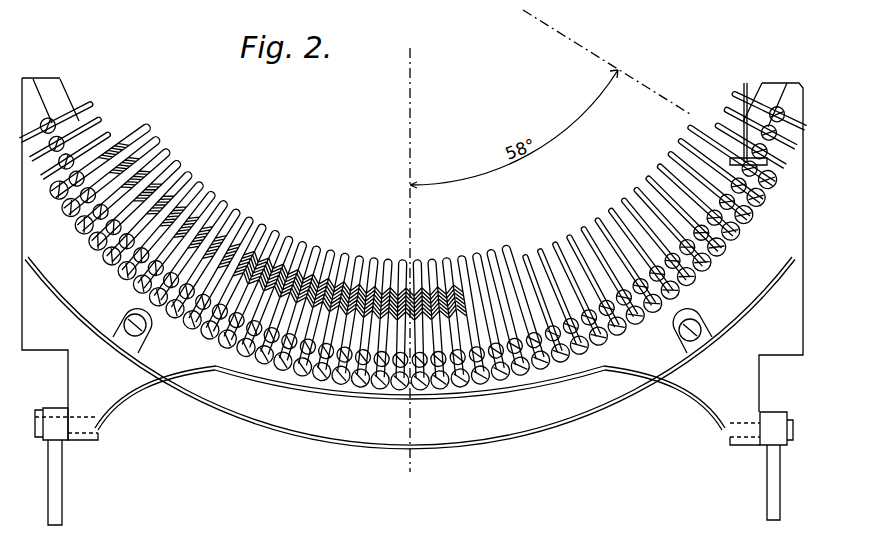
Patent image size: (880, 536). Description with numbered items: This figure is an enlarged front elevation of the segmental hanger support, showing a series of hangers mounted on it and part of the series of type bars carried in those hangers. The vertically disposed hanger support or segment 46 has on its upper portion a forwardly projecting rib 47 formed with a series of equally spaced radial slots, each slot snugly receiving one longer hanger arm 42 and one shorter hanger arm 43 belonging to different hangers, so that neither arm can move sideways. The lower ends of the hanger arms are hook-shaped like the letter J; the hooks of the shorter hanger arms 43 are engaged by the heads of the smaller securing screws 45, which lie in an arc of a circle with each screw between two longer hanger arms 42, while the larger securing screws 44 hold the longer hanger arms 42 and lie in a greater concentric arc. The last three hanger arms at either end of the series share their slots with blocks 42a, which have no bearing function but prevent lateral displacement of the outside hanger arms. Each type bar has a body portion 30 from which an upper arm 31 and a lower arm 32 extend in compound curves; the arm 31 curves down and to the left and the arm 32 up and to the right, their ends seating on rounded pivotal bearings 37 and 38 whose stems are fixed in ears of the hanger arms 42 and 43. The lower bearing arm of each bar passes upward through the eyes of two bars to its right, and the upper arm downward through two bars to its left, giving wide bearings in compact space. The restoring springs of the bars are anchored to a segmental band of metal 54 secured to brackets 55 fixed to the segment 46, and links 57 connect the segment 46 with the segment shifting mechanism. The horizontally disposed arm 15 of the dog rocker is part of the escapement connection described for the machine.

The horizontally disposed arm 15 is at (548, 425).
The body portion 30 is at (467, 363).
The arm 31 is at (465, 255).
The arm 32 is at (480, 353).
The pivotal bearing 37 is at (217, 243).
The pivotal bearing 38 is at (258, 272).
The hanger arm 42 is at (227, 260).
The block 42a is at (76, 97).
The hanger arm 43 is at (187, 237).
The securing screw 44 is at (280, 357).
The securing screw 45 is at (767, 167).
The hanger support or segment 46 is at (587, 386).
The forwardly projecting rib 47 is at (49, 85).
The segmental band of metal 54 is at (636, 393).
The bracket 55 is at (143, 344).
The link 57 is at (60, 478).